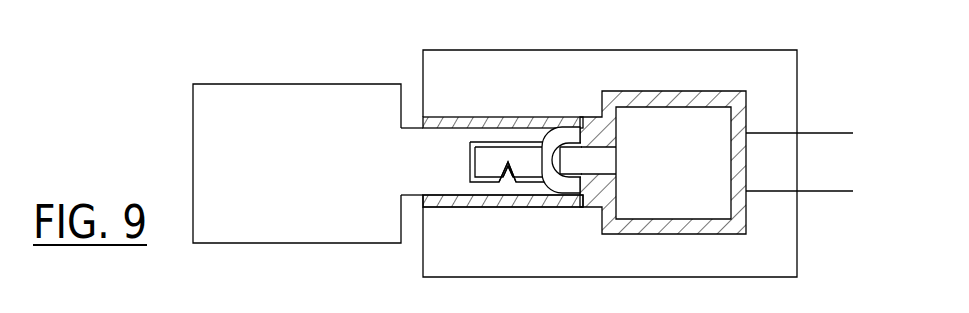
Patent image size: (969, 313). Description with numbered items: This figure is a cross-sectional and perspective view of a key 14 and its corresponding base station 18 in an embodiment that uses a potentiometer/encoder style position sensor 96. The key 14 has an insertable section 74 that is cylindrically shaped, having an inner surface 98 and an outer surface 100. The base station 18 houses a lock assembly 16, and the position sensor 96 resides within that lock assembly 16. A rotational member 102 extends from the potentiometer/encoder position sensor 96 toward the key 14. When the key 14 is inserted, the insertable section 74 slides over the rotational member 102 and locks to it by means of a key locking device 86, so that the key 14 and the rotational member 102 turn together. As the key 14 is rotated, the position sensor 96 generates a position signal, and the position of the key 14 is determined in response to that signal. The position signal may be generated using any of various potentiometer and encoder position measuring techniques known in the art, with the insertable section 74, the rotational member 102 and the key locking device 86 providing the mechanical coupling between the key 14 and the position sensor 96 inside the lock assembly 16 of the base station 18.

The key 14 is at (263, 84).
The base station 18 is at (666, 49).
The insertable section 74 is at (451, 117).
The outer surface 100 is at (450, 197).
The lock assembly 16 is at (527, 203).
The position sensor 96 is at (676, 220).
The inner surface 98 is at (508, 147).
The rotational member 102 is at (576, 128).
The key locking device 86 is at (505, 184).